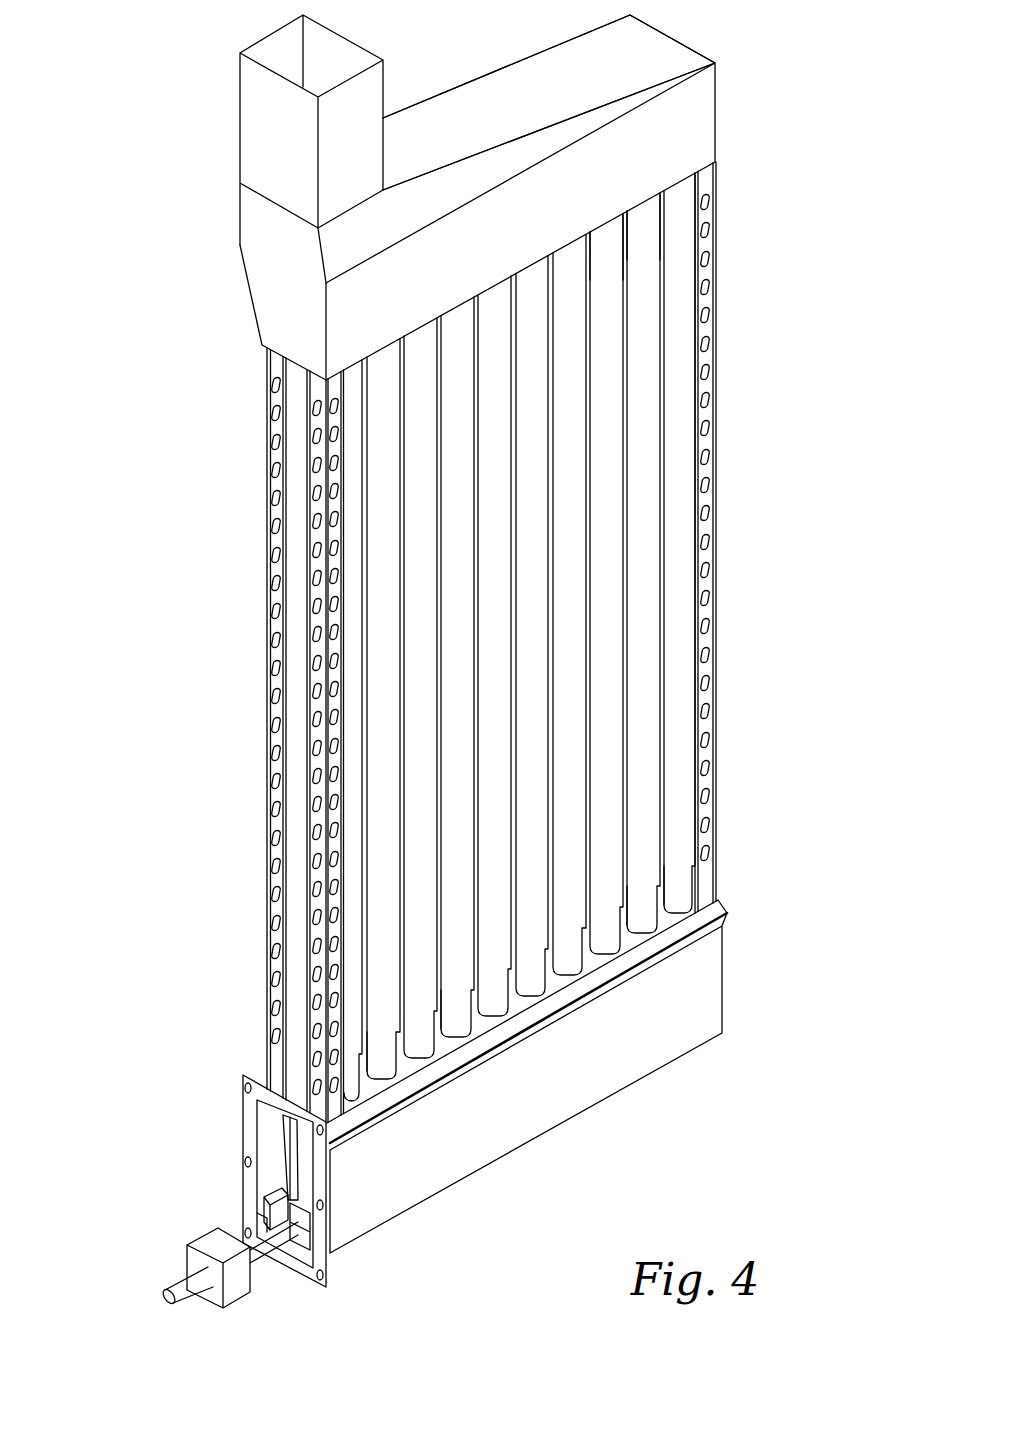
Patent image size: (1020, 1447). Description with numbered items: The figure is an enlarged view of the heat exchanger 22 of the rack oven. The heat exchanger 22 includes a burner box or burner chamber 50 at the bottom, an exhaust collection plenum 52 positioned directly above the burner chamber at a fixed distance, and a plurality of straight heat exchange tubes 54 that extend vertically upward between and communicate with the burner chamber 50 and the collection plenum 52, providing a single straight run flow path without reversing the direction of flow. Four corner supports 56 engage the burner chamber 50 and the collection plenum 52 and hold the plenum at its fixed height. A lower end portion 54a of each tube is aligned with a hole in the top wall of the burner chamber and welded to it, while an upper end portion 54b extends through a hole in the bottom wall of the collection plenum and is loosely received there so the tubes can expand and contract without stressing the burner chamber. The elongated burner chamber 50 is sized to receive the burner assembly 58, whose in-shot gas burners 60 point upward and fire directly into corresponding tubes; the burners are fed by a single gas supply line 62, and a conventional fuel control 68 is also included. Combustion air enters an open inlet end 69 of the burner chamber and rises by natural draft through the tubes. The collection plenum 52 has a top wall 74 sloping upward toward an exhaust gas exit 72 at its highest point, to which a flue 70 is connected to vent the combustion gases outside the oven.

The heat exchanger 22 is at (506, 664).
The burner chamber 50 is at (677, 1042).
The exhaust collection plenum 52 is at (716, 116).
The heat exchange tubes 54 is at (683, 625).
The lower end portion 54a is at (642, 907).
The upper end portion 54b is at (643, 207).
The corner supports 56 is at (715, 340).
The burner assembly 58 is at (312, 1213).
The in-shot gas burners 60 is at (303, 1183).
The gas supply line 62 is at (275, 1240).
The fuel control 68 is at (212, 1241).
The open inlet end 69 is at (262, 1122).
The flue 70 is at (250, 136).
The exhaust gas exit 72 is at (250, 232).
The top wall 74 is at (503, 112).